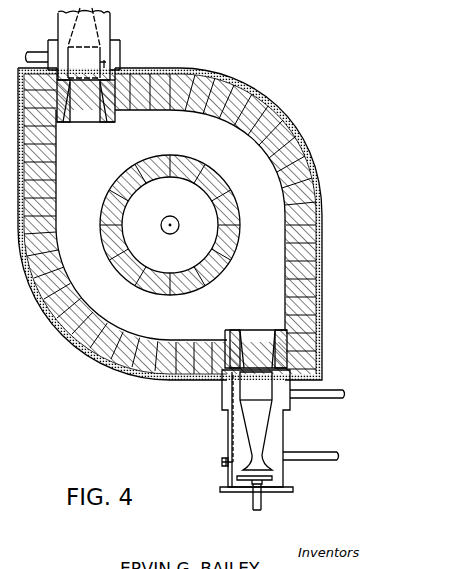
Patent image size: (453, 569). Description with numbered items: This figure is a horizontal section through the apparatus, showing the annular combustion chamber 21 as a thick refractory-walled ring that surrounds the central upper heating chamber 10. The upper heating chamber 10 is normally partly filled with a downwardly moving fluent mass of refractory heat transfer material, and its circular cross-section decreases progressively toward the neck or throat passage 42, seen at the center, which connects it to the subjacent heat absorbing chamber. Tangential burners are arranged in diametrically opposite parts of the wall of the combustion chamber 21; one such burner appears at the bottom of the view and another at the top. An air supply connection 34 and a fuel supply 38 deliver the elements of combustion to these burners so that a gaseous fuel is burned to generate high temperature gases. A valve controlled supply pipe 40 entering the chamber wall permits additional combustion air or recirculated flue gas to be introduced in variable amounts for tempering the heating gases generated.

The annular combustion chamber 21 is at (83, 232).
The upper heating chamber 10 is at (181, 260).
The neck or throat passage 42 is at (177, 219).
The valve controlled supply pipe 40 is at (328, 383).
The air supply connection 34 is at (315, 462).
The fuel supply 38 is at (251, 504).